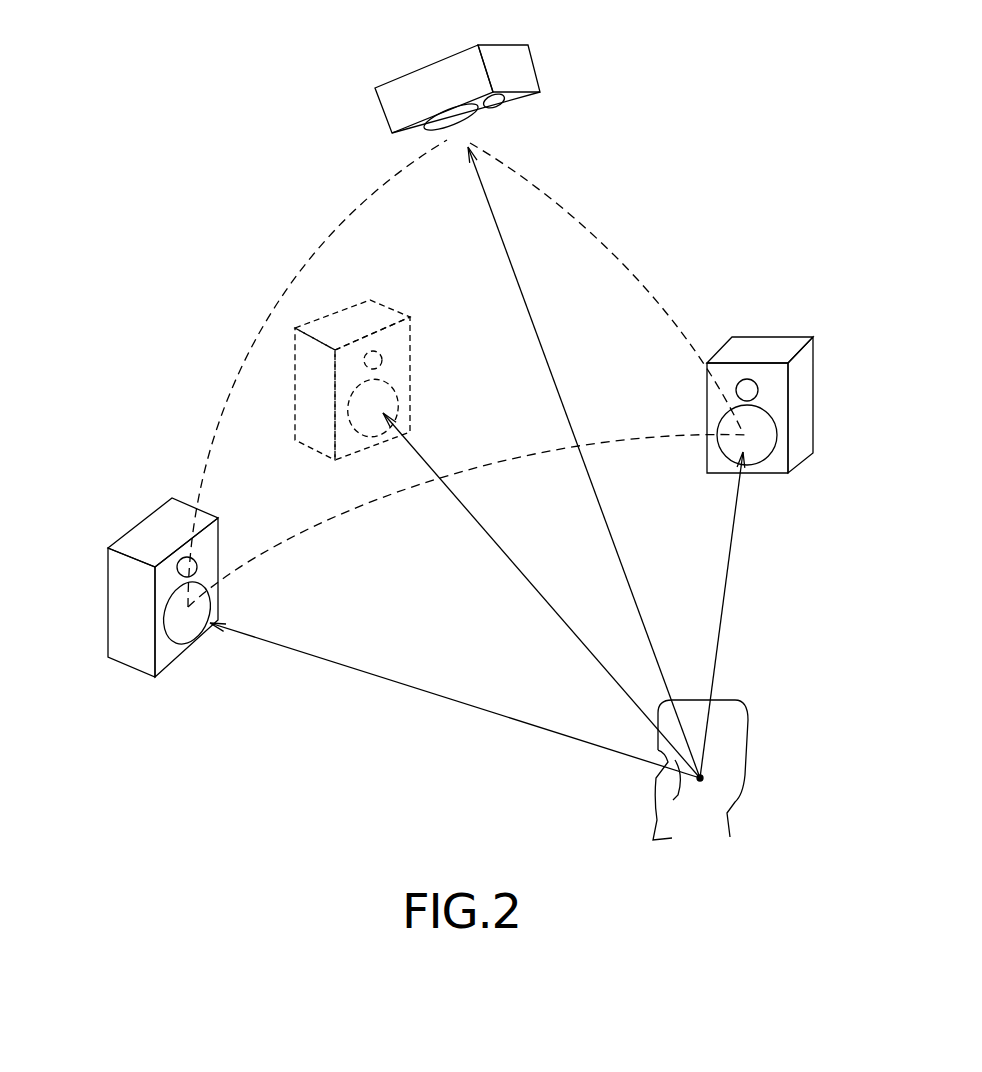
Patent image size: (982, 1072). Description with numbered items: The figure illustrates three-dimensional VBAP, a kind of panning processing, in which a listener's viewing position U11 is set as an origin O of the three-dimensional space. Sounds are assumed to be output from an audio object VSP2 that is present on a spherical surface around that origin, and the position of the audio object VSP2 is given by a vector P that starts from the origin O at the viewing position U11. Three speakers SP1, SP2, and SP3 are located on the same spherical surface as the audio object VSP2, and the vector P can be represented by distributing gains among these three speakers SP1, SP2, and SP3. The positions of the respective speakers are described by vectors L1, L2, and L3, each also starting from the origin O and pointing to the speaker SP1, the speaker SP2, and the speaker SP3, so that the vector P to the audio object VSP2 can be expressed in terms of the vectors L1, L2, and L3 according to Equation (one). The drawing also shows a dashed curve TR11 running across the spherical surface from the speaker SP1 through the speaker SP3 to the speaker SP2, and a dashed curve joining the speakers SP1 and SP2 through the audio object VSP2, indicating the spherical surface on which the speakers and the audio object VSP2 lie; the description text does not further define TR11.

The speaker SP1 is at (108, 598).
The speaker SP2 is at (815, 395).
The speaker SP3 is at (435, 63).
The audio object VSP2 is at (342, 305).
The movement trajectory TR11 is at (625, 263).
The viewing position U11 is at (748, 738).
The origin O is at (703, 783).
The vector L1 is at (397, 687).
The vector L2 is at (732, 568).
The vector L3 is at (593, 493).
The vector P is at (490, 542).